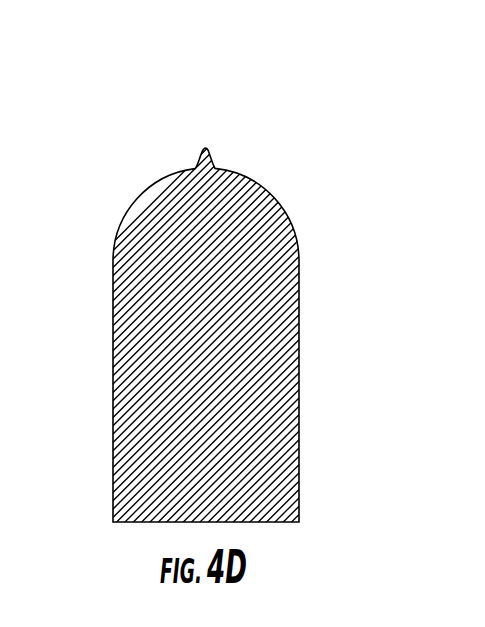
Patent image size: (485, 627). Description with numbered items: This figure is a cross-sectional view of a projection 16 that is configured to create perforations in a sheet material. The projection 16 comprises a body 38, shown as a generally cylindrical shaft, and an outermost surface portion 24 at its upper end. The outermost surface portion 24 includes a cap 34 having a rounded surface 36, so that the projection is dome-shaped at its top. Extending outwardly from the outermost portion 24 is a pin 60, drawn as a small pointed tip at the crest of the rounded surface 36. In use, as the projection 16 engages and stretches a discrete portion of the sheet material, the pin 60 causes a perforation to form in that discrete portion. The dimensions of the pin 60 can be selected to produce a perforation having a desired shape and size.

The projection 16 is at (317, 232).
The outermost surface portion 24 is at (98, 205).
The rounded surface 36 is at (184, 165).
The pin 60 is at (213, 155).
The cap 34 is at (252, 179).
The body 38 is at (113, 375).